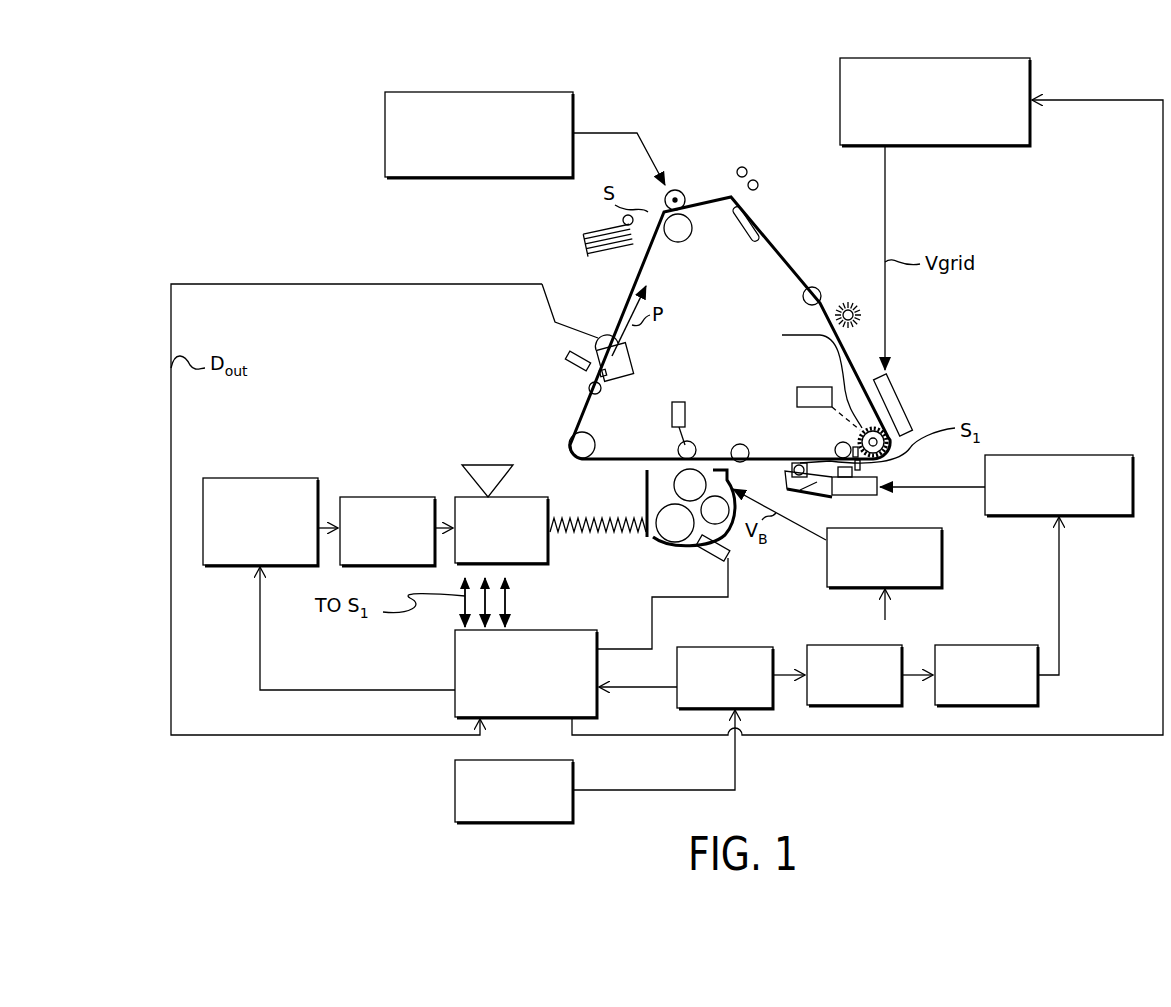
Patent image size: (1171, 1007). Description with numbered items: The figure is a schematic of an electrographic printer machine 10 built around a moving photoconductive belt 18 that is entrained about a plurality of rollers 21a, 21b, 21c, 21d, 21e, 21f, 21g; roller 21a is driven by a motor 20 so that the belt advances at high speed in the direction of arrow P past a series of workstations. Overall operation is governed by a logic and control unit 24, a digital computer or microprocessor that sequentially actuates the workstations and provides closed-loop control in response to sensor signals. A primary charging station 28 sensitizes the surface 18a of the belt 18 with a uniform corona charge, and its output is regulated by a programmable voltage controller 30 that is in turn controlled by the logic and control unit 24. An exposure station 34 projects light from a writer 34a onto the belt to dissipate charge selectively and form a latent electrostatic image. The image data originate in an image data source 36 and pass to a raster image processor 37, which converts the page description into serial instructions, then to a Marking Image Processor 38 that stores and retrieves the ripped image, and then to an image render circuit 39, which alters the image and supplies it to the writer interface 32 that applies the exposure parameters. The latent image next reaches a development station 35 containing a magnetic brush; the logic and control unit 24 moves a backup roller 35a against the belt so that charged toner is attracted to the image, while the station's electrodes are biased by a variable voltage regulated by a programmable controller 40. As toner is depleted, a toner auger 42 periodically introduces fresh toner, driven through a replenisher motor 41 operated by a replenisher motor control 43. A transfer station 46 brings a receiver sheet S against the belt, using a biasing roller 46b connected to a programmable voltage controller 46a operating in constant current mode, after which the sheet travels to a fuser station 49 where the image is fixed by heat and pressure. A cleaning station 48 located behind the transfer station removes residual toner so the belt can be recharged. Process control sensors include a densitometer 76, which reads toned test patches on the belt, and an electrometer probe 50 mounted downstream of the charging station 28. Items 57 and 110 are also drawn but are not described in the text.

The printer machine 10 is at (669, 93).
The photoconductive belt 18 is at (615, 318).
The surface 18a is at (791, 248).
The motor 20 is at (805, 386).
The roller 21a is at (860, 434).
The roller 21b is at (740, 446).
The roller 21c is at (596, 442).
The roller 21d is at (601, 389).
The roller 21e is at (692, 232).
The roller 21f is at (758, 228).
The roller 21g is at (803, 296).
The logic and control unit 24 is at (585, 631).
The primary charging station 28 is at (912, 404).
The programmable voltage controller 30 is at (1032, 80).
The writer interface 32 is at (1070, 455).
The exposure station 34 is at (886, 504).
The writer 34a is at (890, 478).
The development station 35 is at (647, 487).
The backup roller 35a is at (692, 447).
The image data source 36 is at (522, 760).
The raster image processor 37 is at (738, 647).
The Marking Image Processor 38 is at (840, 647).
The image render circuit 39 is at (990, 647).
The programmable controller 40 is at (825, 560).
The replenisher motor 41 is at (370, 497).
The toner auger 42 is at (513, 497).
The replenisher motor control 43 is at (250, 478).
The transfer station 46 is at (700, 188).
The programmable voltage controller 46a is at (412, 178).
The roller 46b is at (662, 200).
The cleaning station 48 is at (850, 303).
The fuser station 49 is at (766, 165).
The electrometer probe 50 is at (810, 500).
The development blade 57 is at (713, 549).
The densitometer 76 is at (580, 378).
The sensor roller 110 is at (835, 445).